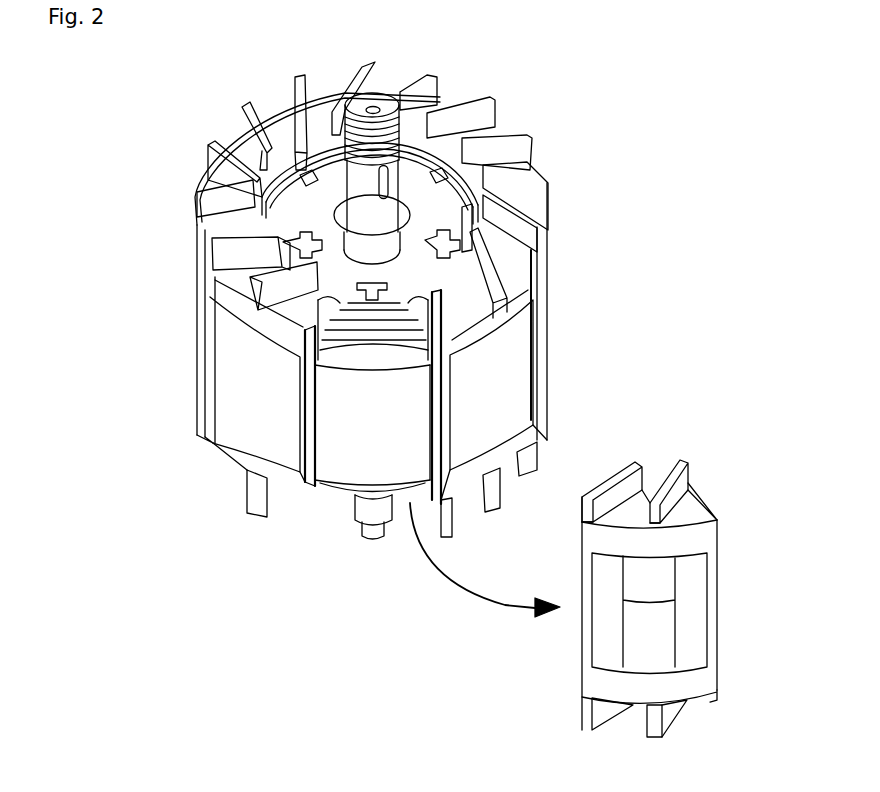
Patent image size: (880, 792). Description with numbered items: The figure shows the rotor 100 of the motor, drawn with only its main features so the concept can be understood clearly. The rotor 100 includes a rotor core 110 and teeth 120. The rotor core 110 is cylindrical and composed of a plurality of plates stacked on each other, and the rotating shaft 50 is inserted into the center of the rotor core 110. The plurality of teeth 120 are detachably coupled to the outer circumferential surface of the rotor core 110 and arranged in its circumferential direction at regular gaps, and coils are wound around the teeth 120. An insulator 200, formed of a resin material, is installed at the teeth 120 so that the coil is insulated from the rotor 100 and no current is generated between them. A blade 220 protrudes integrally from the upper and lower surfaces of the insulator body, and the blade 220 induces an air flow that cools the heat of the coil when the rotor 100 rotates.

The rotating shaft 50 is at (393, 200).
The rotor 100 is at (90, 285).
The rotor core 110 is at (325, 250).
The teeth 120 is at (347, 412).
The insulator 200 is at (515, 304).
The blade 220 is at (497, 290).